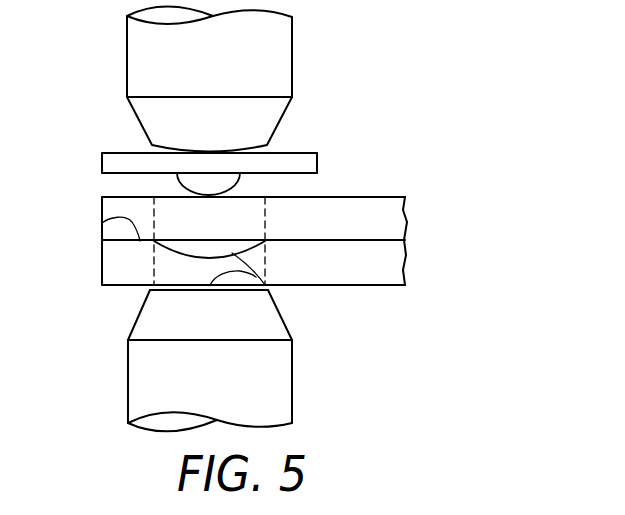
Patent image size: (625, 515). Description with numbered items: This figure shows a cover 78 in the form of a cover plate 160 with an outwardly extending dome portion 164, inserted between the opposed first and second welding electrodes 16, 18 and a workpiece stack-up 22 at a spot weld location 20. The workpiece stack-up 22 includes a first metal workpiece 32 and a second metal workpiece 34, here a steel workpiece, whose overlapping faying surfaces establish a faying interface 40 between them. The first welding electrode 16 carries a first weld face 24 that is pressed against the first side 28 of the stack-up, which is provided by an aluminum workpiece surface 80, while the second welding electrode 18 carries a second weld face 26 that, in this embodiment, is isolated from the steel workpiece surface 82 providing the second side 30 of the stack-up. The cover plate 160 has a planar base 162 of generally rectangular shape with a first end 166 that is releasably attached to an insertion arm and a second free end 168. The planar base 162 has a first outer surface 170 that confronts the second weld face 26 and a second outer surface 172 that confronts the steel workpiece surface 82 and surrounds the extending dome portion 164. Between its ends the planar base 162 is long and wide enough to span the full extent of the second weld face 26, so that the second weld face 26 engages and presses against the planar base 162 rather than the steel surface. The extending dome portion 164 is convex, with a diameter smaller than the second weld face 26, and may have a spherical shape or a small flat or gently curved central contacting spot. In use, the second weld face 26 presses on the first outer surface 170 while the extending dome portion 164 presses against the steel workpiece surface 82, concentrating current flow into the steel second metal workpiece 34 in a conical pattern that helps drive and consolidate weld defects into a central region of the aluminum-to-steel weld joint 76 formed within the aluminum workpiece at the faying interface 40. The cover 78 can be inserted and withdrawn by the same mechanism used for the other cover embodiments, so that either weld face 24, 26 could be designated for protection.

The first welding electrode 16 is at (294, 378).
The second welding electrode 18 is at (293, 60).
The spot weld location 20 is at (265, 226).
The workpiece stack-up 22 is at (405, 240).
The first weld face 24 is at (266, 287).
The second weld face 26 is at (215, 152).
The first side 28 is at (371, 285).
The second side 30 is at (380, 197).
The first metal workpiece 32 is at (392, 262).
The second metal workpiece 34 is at (345, 197).
The faying interface 40 is at (128, 174).
The weld joint 76 is at (264, 273).
The cover 78 is at (288, 152).
The aluminum workpiece surface 80 is at (338, 285).
The steel workpiece surface 82 is at (338, 213).
The cover plate 160 is at (128, 152).
The planar base 162 is at (111, 157).
The extending dome portion 164 is at (185, 188).
The first end 166 is at (102, 165).
The second free end 168 is at (318, 163).
The first outer surface 170 is at (137, 152).
The second outer surface 172 is at (114, 197).